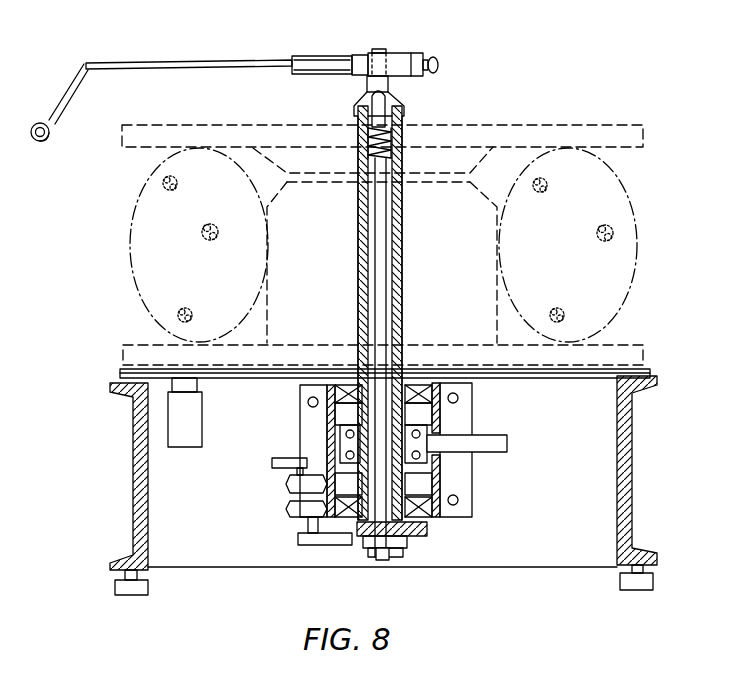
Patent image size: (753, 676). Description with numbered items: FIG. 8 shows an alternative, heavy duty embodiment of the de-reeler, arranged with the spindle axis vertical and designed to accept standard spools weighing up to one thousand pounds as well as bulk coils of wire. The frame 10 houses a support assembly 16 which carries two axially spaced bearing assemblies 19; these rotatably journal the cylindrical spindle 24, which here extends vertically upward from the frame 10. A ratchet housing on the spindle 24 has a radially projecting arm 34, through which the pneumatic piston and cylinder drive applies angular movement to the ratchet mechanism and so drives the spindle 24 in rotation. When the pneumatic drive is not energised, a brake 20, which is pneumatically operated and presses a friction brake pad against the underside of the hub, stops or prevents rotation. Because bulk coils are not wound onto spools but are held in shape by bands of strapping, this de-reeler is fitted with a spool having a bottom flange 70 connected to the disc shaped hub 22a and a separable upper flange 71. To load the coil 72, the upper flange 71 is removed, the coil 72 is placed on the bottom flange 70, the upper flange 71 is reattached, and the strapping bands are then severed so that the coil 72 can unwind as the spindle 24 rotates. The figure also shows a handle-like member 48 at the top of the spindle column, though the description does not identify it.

The frame 10 is at (636, 486).
The support assembly 16 is at (298, 425).
The bearing assemblies 19 is at (356, 396).
The brake 20 is at (162, 423).
The disc shaped hub 22a is at (577, 373).
The spindle 24 is at (403, 222).
The radially projecting arm 34 is at (483, 453).
The handle 48 is at (205, 61).
The bottom flange 70 is at (123, 353).
The upper flange 71 is at (643, 133).
The coil 72 is at (128, 243).